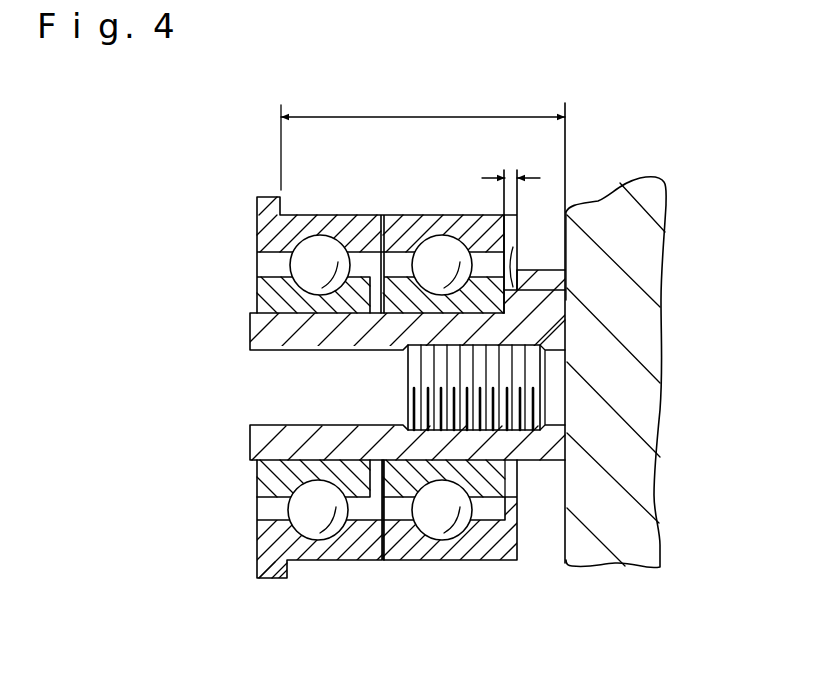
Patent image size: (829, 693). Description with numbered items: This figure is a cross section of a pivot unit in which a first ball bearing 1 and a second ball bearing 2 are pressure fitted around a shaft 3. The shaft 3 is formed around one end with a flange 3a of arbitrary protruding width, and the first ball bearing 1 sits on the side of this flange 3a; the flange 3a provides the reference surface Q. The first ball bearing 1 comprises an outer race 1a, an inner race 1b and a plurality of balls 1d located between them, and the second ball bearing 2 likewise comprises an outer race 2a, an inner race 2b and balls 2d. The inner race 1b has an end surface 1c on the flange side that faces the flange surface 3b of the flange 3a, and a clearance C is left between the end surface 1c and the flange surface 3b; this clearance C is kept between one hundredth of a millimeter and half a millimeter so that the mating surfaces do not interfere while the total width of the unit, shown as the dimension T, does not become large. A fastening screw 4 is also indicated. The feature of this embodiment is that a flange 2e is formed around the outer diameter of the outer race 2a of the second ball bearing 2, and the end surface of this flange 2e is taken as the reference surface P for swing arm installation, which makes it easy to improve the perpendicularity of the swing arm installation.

The first ball bearing 1 is at (430, 563).
The outer race 1a is at (462, 560).
The inner race 1b is at (545, 430).
The end surface on the flange side 1c is at (567, 290).
The balls 1d is at (470, 522).
The second ball bearing 2 is at (243, 502).
The outer race 2a is at (372, 560).
The inner race 2b is at (258, 477).
The balls 2d is at (289, 508).
The flange 2e is at (262, 568).
The shaft 3 is at (250, 328).
The flange 3a is at (567, 230).
The flange surface 3b is at (518, 268).
The fastening screw 4 is at (500, 346).
The overall length dimension T is at (423, 141).
The clearance C is at (511, 163).
The reference surface P is at (290, 572).
The reference surface Q is at (567, 478).